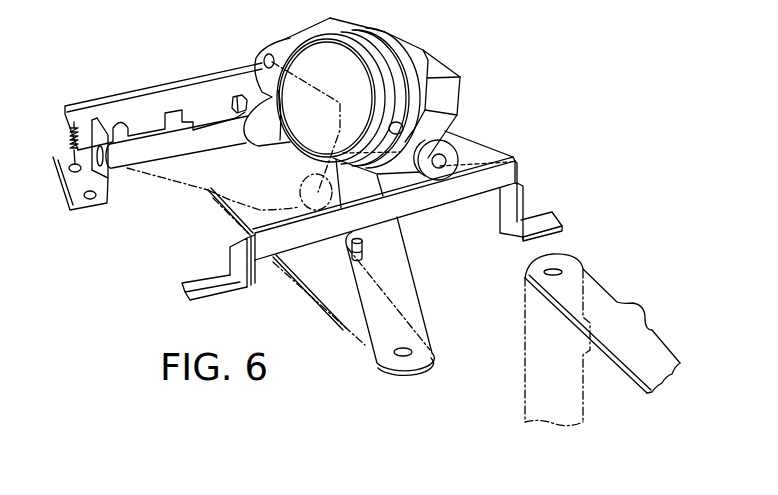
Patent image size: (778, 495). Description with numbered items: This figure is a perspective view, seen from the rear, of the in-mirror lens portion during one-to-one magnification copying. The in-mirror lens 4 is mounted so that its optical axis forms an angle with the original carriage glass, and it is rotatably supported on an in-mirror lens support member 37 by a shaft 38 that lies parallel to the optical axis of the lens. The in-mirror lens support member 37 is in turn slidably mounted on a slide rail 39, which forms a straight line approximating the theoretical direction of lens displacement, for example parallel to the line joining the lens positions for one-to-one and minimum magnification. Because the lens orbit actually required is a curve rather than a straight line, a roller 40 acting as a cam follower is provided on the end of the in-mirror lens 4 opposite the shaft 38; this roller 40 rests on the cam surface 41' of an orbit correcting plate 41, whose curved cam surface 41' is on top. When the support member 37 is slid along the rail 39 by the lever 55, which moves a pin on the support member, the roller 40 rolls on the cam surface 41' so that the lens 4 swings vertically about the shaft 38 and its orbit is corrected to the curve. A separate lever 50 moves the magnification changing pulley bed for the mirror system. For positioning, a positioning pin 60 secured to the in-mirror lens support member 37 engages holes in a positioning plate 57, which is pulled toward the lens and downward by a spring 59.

The in-mirror lens 4 is at (412, 50).
The in-mirror lens support member 37 is at (458, 137).
The shaft 38 is at (270, 53).
The slide rail 39 is at (156, 150).
The roller 40 is at (437, 173).
The orbit correcting plate 41 is at (488, 217).
The cam surface 41' is at (232, 267).
The lever 50 is at (600, 298).
The lever 55 is at (408, 307).
The positioning plate 57 is at (180, 97).
The spring 59 is at (70, 143).
The positioning pin 60 is at (240, 100).